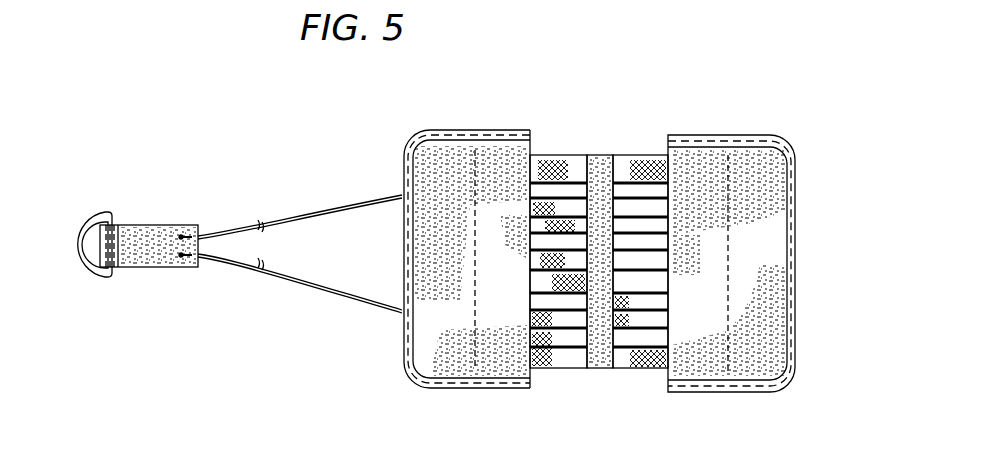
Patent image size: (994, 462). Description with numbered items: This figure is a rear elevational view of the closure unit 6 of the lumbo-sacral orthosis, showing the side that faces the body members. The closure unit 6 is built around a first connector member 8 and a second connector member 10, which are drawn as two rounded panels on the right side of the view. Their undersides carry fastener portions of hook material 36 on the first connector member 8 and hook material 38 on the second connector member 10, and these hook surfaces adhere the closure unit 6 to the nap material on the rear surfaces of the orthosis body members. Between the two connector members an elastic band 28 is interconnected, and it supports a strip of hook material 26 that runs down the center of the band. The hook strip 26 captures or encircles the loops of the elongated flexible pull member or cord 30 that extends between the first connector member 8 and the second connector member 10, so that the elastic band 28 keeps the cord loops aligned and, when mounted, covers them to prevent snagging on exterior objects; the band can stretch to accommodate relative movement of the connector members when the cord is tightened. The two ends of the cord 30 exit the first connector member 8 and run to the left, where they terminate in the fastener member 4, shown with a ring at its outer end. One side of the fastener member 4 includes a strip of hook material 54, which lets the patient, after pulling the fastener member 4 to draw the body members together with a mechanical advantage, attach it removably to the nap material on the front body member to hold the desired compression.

The fastener member 4 is at (92, 213).
The strip of hook material 54 is at (150, 235).
The cord 30 is at (340, 205).
The first connector member 8 is at (467, 250).
The strip of hook material 26 is at (600, 167).
The elastic band 28 is at (628, 167).
The closure unit 6 is at (737, 244).
The second connector member 10 is at (787, 147).
The hook material 36 is at (443, 343).
The hook material 38 is at (743, 350).